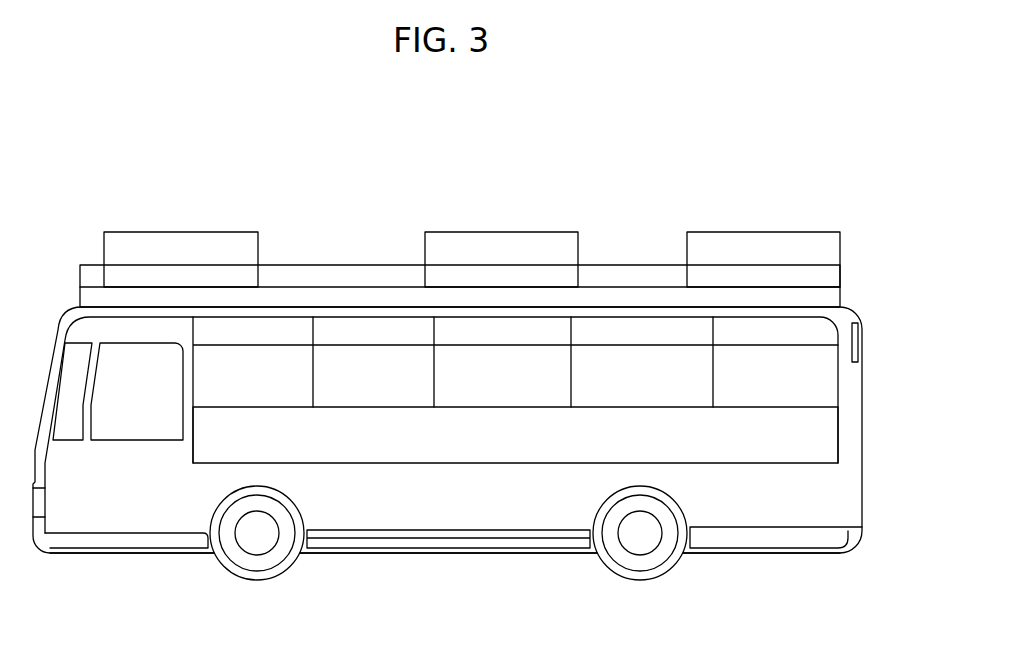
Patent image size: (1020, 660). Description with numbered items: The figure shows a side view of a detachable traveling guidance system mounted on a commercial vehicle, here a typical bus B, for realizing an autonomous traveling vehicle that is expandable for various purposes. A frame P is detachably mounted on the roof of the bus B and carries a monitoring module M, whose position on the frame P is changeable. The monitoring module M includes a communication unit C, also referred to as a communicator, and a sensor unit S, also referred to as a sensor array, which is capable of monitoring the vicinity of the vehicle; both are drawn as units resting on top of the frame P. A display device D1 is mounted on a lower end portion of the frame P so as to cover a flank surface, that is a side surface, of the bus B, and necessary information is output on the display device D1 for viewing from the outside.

The bus B is at (435, 510).
The frame P is at (833, 298).
The monitoring module M is at (553, 148).
The communication unit C is at (530, 250).
The sensor unit S is at (713, 250).
The display device D1 is at (813, 438).